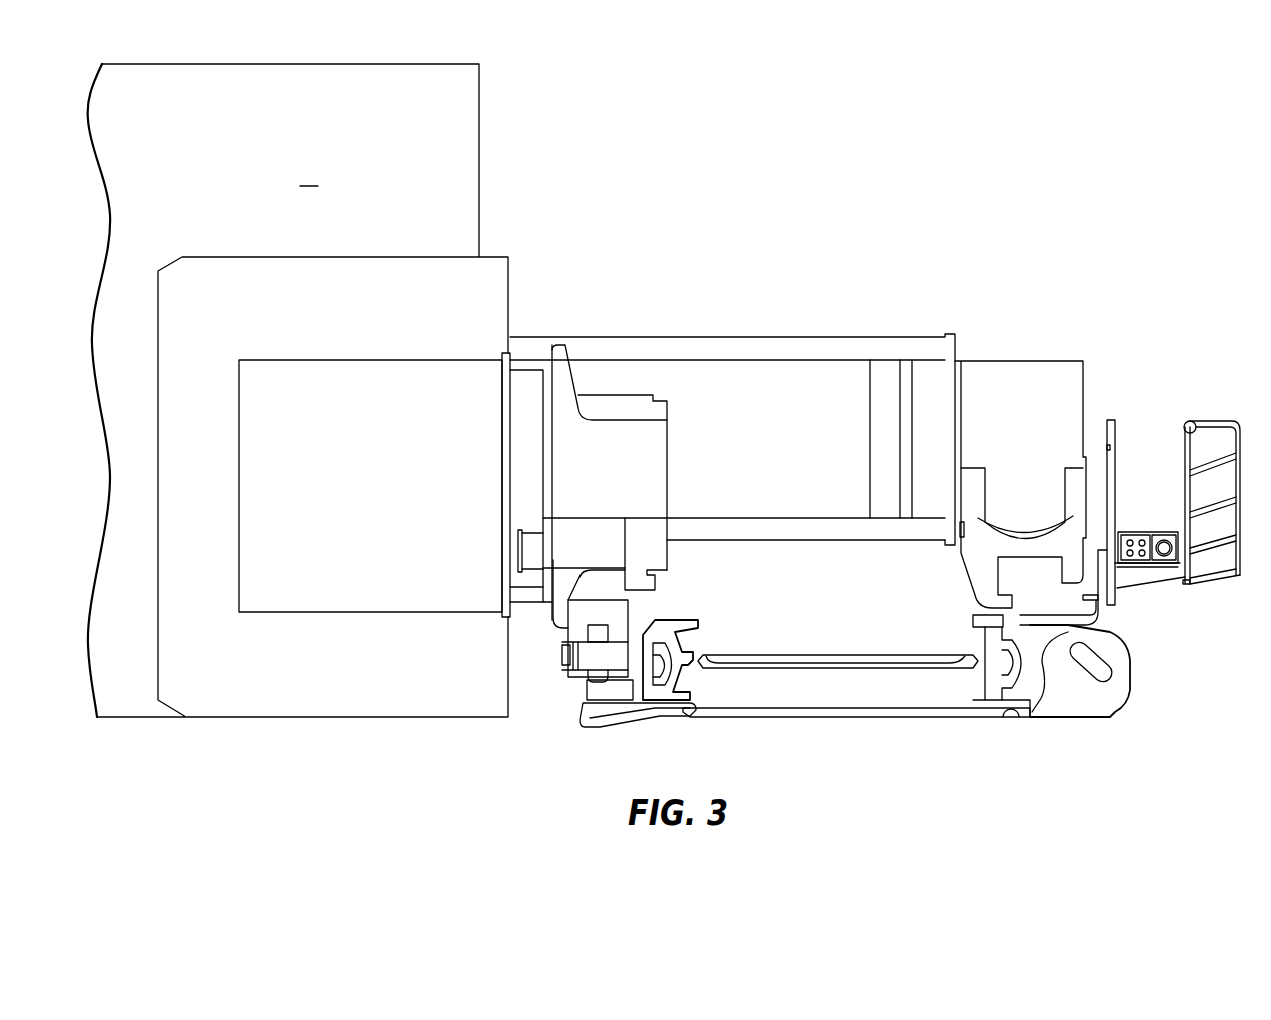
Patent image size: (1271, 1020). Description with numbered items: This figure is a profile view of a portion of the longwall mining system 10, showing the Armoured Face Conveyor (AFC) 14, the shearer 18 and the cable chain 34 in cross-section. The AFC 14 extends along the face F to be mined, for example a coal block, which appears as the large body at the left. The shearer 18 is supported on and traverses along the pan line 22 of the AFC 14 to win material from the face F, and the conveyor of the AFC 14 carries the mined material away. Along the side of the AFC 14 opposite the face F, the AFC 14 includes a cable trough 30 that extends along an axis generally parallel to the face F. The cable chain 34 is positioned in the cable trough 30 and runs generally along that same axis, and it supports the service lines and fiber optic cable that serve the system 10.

The longwall mining system 10 is at (1008, 190).
The Armoured Face Conveyor 14 is at (926, 731).
The shearer 18 is at (698, 328).
The pan line 22 is at (788, 648).
The cable trough 30 is at (1183, 480).
The cable chain 34 is at (1154, 578).
The face F is at (299, 390).